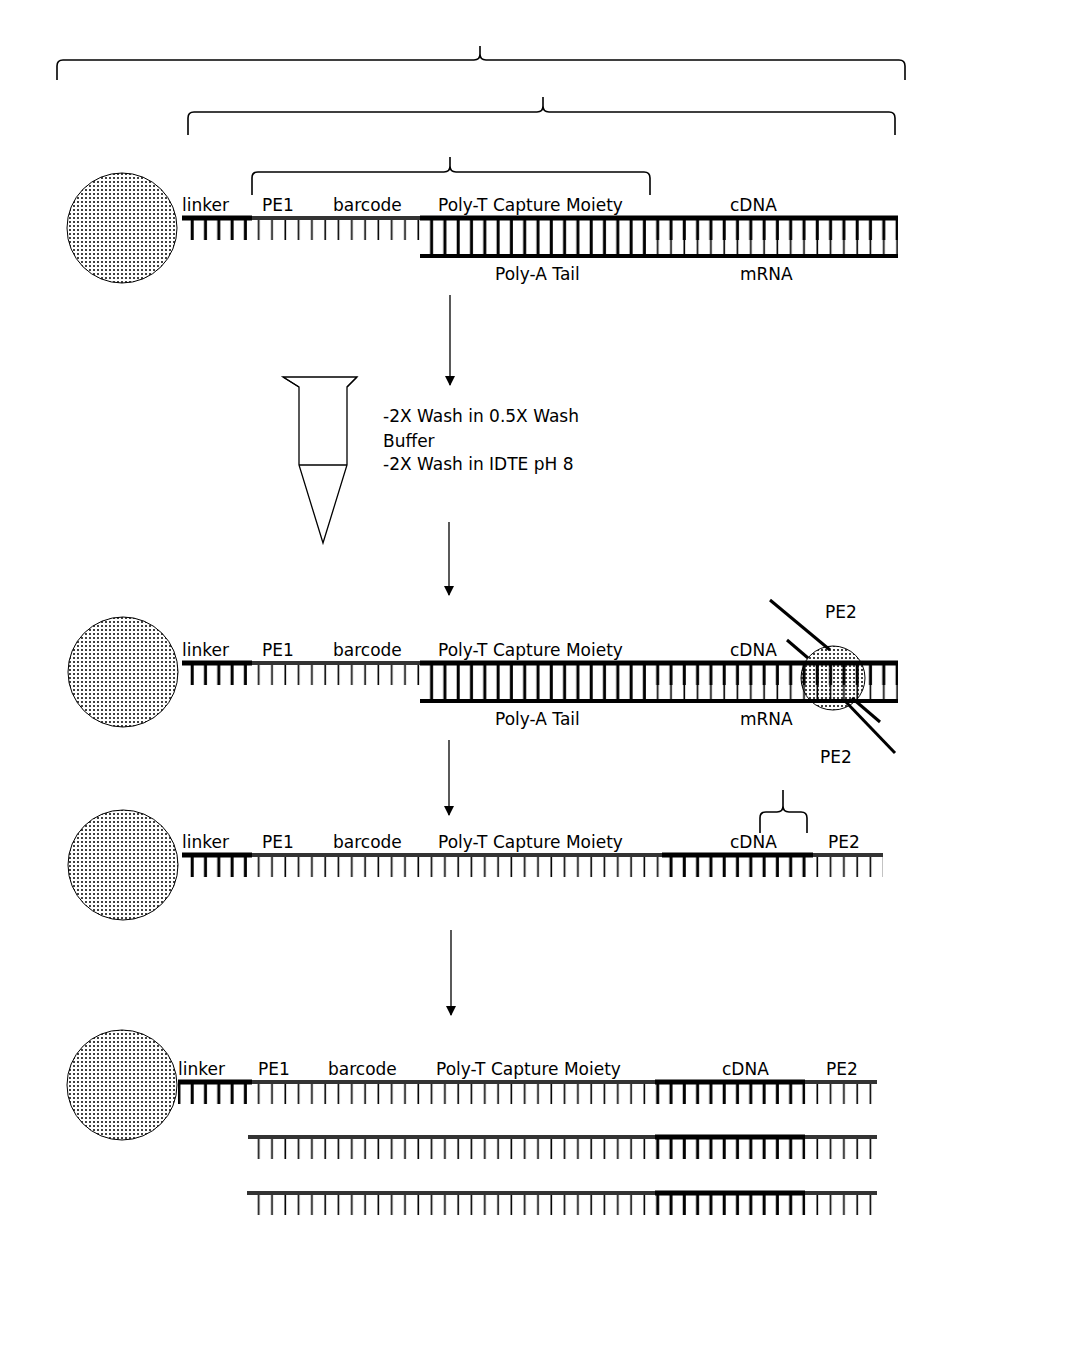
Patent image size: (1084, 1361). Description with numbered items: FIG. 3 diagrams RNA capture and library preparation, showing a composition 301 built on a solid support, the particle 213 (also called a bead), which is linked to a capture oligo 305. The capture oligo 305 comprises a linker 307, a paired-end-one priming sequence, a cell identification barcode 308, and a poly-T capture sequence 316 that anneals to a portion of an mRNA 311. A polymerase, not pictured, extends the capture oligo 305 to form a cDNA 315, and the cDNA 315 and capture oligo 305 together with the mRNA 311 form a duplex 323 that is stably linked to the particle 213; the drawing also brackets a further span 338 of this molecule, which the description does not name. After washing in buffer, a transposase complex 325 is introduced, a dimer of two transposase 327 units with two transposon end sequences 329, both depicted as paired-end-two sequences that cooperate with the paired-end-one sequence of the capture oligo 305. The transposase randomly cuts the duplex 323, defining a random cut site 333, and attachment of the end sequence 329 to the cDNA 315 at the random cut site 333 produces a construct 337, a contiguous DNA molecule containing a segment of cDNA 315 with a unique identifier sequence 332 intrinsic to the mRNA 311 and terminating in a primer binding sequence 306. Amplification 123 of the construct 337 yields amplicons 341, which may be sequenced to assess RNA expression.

The particle 213 is at (97, 182).
The composition 301 is at (481, 44).
The oligonucleotide portion 338 is at (541, 98).
The capture oligo 305 is at (451, 157).
The linker 307 is at (200, 248).
The cell identification barcode 308 is at (352, 248).
The capture sequence 316 is at (637, 216).
The cDNA 315 is at (698, 216).
The mRNA 311 is at (620, 258).
The duplex 323 is at (922, 235).
The transposase complex 325 is at (818, 545).
The transposase 327 is at (850, 650).
The transposon end sequences 329 is at (792, 615).
The unique identifier sequence 332 is at (737, 818).
The random cut site 333 is at (812, 885).
The primer binding sequence 306 is at (860, 885).
The construct 337 is at (232, 812).
The amplicons 341 is at (218, 1015).
The amplification 123 is at (450, 978).